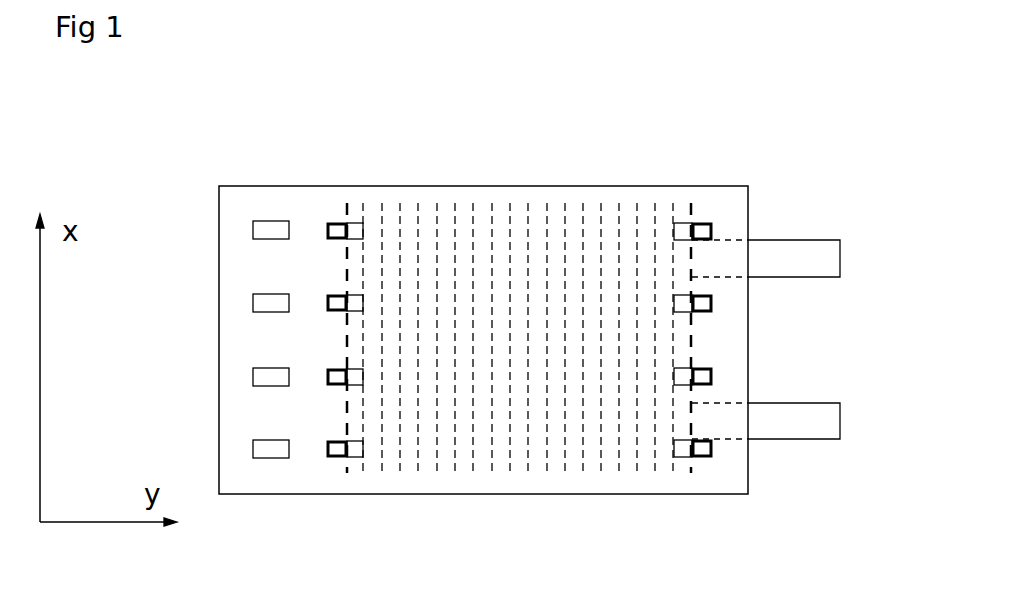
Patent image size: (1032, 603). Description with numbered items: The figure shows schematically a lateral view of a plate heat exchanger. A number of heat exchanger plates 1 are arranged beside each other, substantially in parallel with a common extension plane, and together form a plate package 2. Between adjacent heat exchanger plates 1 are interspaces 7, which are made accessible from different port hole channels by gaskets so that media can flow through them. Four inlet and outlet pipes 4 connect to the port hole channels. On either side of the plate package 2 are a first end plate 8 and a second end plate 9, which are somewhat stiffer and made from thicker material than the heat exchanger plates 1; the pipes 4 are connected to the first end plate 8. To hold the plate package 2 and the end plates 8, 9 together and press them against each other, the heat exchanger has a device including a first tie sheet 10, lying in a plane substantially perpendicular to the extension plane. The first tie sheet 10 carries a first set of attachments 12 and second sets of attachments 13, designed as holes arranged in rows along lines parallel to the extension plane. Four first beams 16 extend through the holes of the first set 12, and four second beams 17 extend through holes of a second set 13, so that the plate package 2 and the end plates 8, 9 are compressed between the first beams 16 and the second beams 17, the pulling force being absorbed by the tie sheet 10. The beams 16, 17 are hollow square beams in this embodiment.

The heat exchanger plate 1 is at (473, 278).
The plate package 2 is at (534, 207).
The inlet and outlet pipe 4 is at (793, 252).
The interspace 7 is at (517, 404).
The first end plate 8 is at (690, 333).
The second end plate 9 is at (347, 330).
The first tie sheet 10 is at (233, 447).
The first set of attachments 12 is at (683, 303).
The second set of attachments 13 is at (268, 305).
The first beam 16 is at (700, 303).
The second beam 17 is at (332, 300).